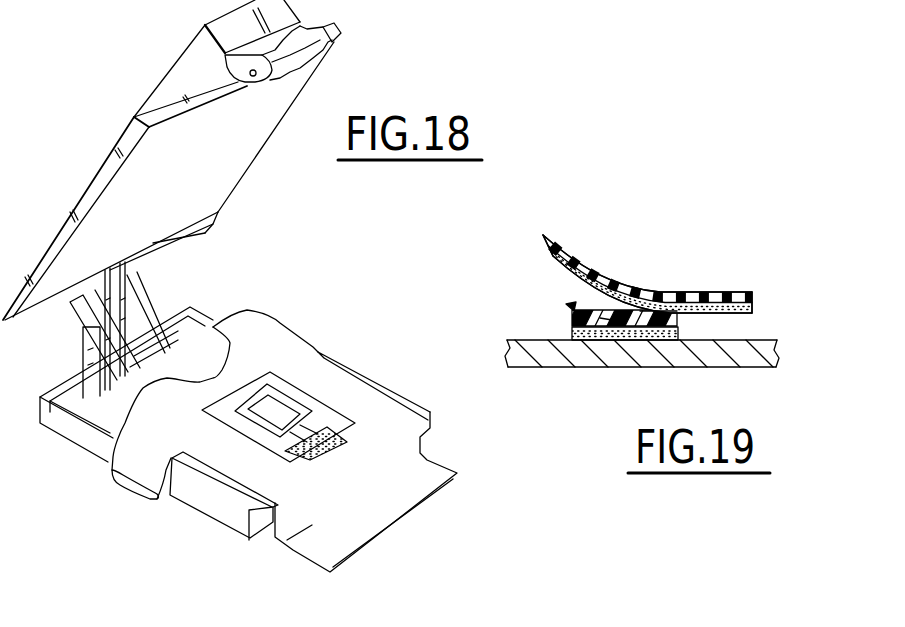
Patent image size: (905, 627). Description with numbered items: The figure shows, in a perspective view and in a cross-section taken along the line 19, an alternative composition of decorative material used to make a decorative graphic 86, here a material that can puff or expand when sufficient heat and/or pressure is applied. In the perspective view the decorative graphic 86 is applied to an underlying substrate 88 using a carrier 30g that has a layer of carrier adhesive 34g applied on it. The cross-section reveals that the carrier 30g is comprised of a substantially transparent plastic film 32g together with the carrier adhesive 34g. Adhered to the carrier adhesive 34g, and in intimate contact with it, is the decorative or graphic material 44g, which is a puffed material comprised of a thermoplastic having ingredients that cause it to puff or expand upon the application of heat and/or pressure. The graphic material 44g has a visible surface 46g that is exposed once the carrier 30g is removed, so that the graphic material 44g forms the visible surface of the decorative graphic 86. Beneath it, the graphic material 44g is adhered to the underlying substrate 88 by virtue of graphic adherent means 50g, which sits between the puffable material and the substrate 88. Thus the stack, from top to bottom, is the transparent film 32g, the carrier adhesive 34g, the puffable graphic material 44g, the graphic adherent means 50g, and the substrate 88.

In FIG. 18, the section line 19— 19 is at (281, 465).
In FIG. 18, the carrier 30g is at (357, 423).
In FIG. 19, the carrier 30g is at (640, 266).
In FIG. 19, the substantially transparent plastic film 32g is at (746, 293).
In FIG. 18, the carrier adhesive 34g is at (350, 441).
In FIG. 19, the carrier adhesive 34g is at (748, 305).
In FIG. 19, the decorative material 44g is at (568, 305).
In FIG. 19, the visible surface 46g is at (658, 305).
In FIG. 19, the graphic adherent means 50g is at (637, 333).
In FIG. 18, the decorative graphic 86 is at (290, 403).
In FIG. 19, the decorative graphic 86 is at (608, 316).
In FIG. 18, the substrate 88 is at (213, 455).
In FIG. 19, the substrate 88 is at (744, 357).